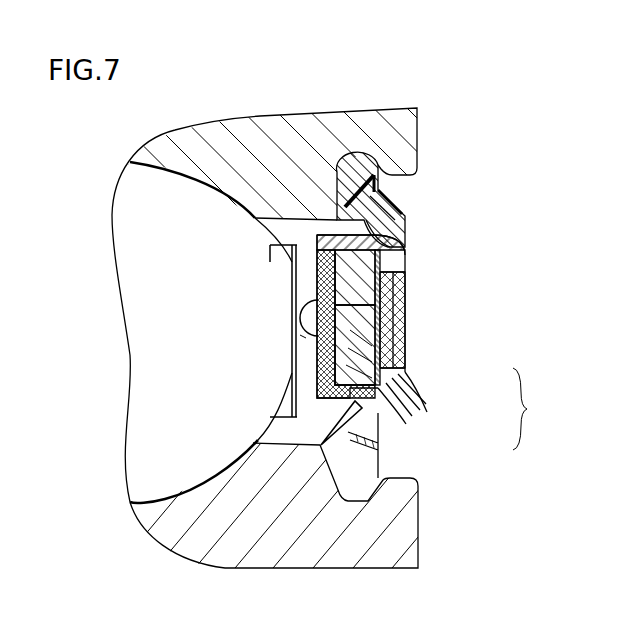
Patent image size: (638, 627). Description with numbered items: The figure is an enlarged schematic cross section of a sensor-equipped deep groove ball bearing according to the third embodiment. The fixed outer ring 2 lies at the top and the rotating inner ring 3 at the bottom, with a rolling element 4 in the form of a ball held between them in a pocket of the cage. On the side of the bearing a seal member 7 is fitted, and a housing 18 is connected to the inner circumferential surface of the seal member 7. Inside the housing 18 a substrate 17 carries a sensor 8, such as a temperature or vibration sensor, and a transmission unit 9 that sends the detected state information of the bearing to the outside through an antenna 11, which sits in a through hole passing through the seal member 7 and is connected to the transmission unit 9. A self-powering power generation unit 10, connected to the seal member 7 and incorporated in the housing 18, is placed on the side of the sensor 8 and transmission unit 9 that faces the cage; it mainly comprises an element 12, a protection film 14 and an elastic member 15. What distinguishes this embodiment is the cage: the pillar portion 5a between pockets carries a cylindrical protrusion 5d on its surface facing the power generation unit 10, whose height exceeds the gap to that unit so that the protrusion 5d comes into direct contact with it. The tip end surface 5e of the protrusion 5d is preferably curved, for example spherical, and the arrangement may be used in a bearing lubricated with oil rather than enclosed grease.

The outer ring 2 is at (408, 132).
The inner ring 3 is at (407, 537).
The rolling element 4 is at (155, 440).
The pillar portion 5a is at (290, 250).
The protrusion 5d is at (304, 318).
The tip end surface 5e is at (306, 338).
The seal member 7 is at (385, 215).
The sensor 8 is at (357, 322).
The transmission unit 9 is at (360, 287).
The power generation unit 10 is at (447, 392).
The antenna 11 is at (385, 262).
The element 12 is at (350, 352).
The protection film 14 is at (348, 368).
The elastic member 15 is at (352, 334).
The substrate 17 is at (380, 338).
The housing 18 is at (352, 398).